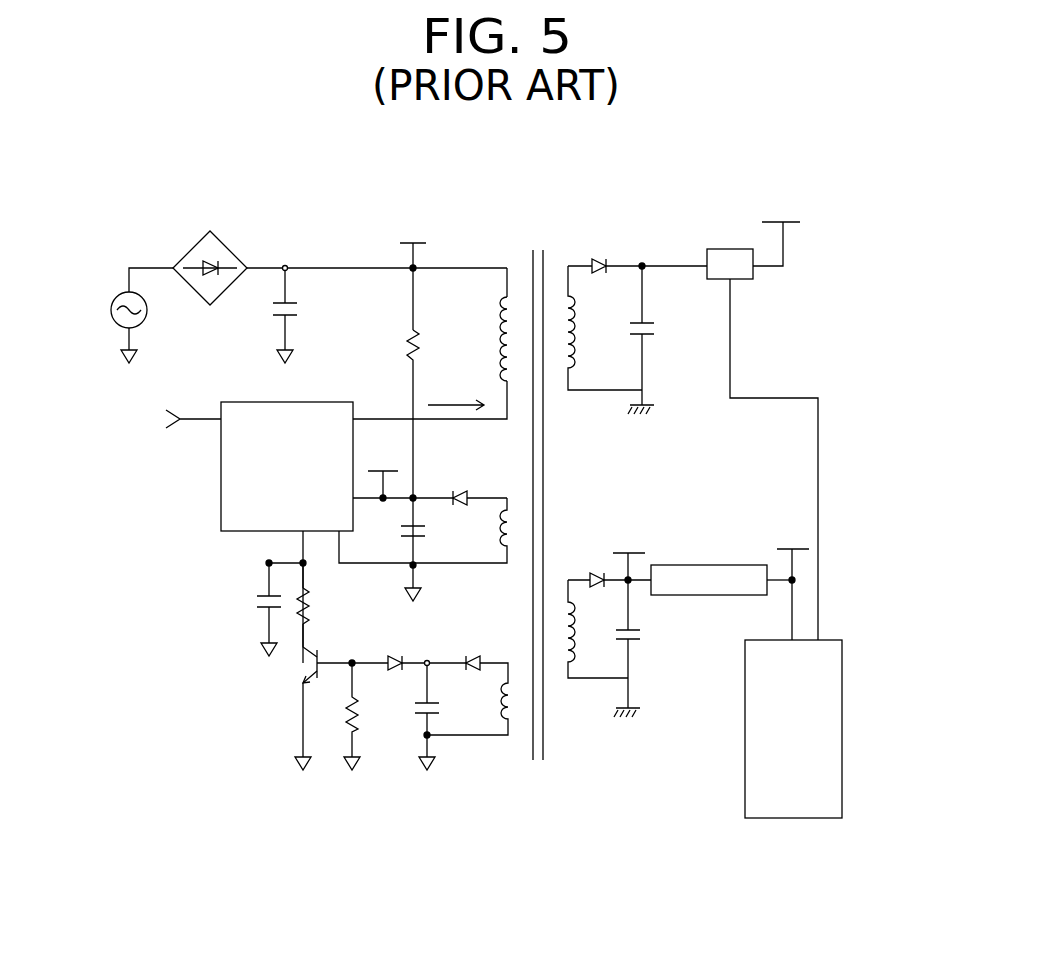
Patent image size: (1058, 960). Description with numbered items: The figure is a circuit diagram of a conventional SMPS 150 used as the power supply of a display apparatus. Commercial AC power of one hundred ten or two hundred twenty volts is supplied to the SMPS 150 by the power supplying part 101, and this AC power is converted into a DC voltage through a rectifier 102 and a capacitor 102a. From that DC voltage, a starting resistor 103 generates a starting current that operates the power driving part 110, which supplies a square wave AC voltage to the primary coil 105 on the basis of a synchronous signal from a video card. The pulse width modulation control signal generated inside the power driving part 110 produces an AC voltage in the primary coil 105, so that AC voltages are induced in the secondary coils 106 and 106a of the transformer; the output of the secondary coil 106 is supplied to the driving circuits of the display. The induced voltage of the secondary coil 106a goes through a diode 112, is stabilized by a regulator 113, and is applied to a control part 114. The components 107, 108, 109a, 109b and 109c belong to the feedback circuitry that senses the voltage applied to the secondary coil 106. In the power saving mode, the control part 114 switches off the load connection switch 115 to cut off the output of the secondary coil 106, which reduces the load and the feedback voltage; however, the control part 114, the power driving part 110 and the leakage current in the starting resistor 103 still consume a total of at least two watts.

The power supplying part 101 is at (111, 308).
The rectifier 102 is at (205, 261).
The capacitor 102a is at (292, 300).
The starting resistor 103 is at (418, 329).
The primary coil 105 is at (512, 288).
The secondary coil 106 is at (566, 380).
The secondary coil 106a is at (568, 666).
The Vcc supply diode D11 and winding 107 is at (472, 493).
The Vcc capacitor C11 108 is at (418, 540).
The feedback rectifier diode D12 109a is at (478, 656).
The feedback transistor Q11 109b is at (305, 667).
The feedback capacitor C13 109c is at (258, 610).
The power driving part 110 is at (313, 402).
The diode 112 is at (590, 576).
The regulator 113 is at (697, 565).
The control part 114 is at (842, 665).
The load connection switch 115 is at (710, 249).
The SMPS 150 is at (513, 915).